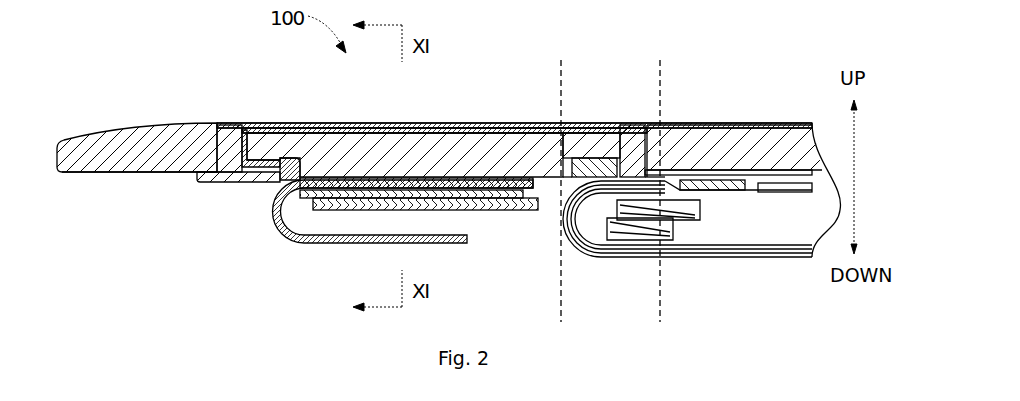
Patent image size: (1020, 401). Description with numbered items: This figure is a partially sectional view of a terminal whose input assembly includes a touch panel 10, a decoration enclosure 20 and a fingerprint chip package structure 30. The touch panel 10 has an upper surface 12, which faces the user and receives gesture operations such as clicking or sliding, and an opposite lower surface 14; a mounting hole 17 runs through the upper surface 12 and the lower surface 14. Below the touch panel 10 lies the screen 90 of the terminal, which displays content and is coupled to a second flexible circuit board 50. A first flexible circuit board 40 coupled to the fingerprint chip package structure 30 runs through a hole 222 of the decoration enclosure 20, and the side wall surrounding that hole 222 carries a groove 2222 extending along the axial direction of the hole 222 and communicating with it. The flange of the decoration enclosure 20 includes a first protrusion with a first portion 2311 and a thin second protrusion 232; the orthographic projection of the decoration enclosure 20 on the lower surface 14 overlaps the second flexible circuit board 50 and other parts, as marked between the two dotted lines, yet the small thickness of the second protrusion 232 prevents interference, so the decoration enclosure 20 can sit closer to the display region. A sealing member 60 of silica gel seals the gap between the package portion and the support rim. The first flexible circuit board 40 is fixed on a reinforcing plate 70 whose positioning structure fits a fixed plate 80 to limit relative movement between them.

The touch panel 10 is at (752, 140).
The upper surface 12 is at (205, 121).
The lower surface 14 is at (140, 174).
The mounting hole 17 is at (221, 126).
The decoration enclosure 20 is at (662, 132).
The fingerprint chip package structure 30 is at (455, 124).
The first flexible circuit board 40 is at (300, 245).
The second flexible circuit board 50 is at (578, 255).
The sealing member 60 is at (600, 140).
The reinforcing plate 70 is at (492, 211).
The fixed plate 80 is at (453, 244).
The screen 90 is at (792, 190).
The hole 222 is at (561, 190).
The second protrusion 232 is at (697, 143).
The groove 2222 is at (278, 184).
The first portion 2311 is at (200, 183).